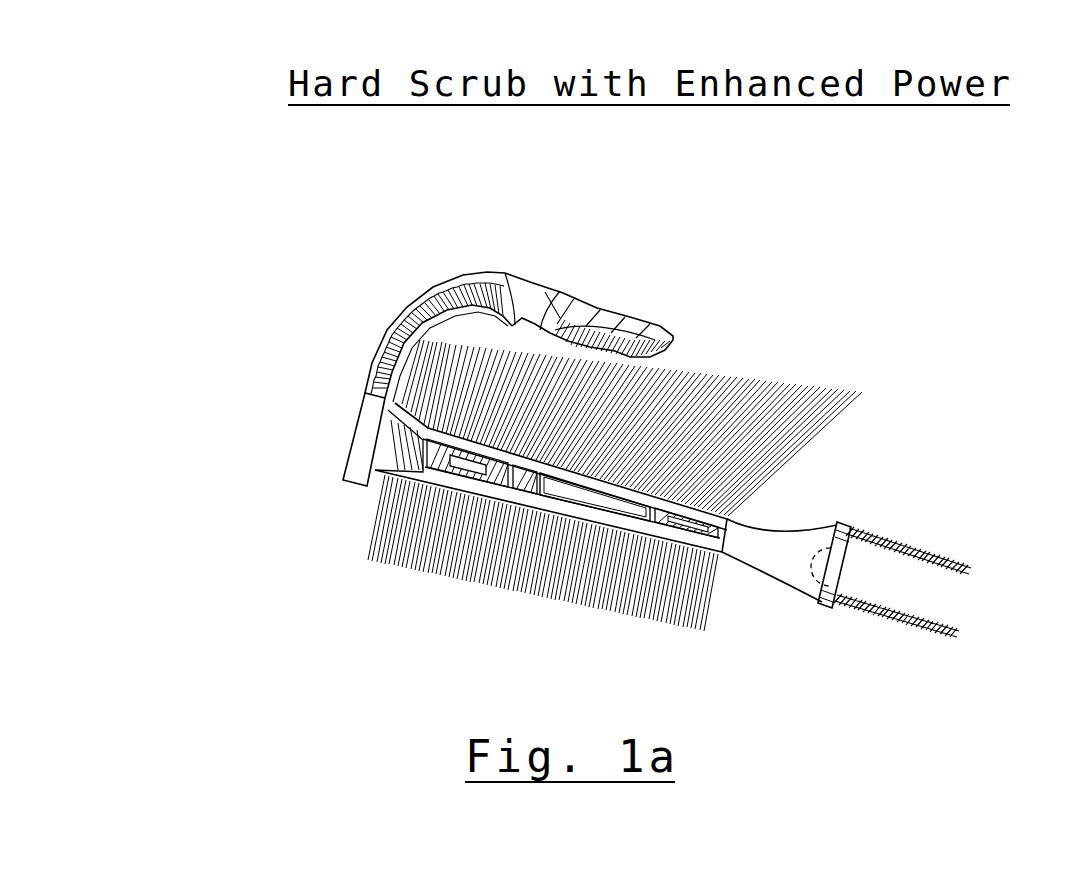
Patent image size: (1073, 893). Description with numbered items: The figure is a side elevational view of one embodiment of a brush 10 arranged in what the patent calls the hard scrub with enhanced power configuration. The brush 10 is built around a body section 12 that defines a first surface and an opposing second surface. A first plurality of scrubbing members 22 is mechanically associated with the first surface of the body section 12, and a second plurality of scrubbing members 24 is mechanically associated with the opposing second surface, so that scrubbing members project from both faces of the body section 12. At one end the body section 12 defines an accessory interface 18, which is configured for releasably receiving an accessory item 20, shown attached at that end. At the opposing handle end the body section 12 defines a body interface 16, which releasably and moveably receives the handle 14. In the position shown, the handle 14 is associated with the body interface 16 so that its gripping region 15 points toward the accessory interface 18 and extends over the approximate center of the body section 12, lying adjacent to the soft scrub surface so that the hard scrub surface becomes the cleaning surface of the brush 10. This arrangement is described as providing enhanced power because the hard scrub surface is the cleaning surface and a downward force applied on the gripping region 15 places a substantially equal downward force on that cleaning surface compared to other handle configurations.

The brush 10 is at (808, 313).
The body section 12 is at (437, 478).
The handle 14 is at (467, 280).
The gripping region 15 is at (603, 280).
The body interface 16 is at (347, 428).
The accessory interface 18 is at (722, 555).
The accessory item 20 is at (778, 568).
The first plurality of scrubbing members 22 is at (795, 452).
The second plurality of scrubbing members 24 is at (512, 588).